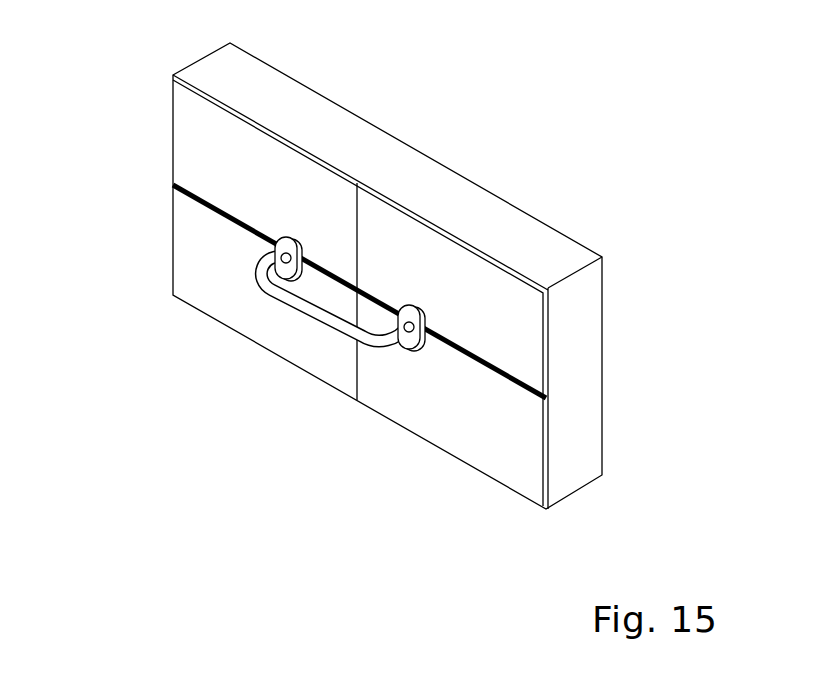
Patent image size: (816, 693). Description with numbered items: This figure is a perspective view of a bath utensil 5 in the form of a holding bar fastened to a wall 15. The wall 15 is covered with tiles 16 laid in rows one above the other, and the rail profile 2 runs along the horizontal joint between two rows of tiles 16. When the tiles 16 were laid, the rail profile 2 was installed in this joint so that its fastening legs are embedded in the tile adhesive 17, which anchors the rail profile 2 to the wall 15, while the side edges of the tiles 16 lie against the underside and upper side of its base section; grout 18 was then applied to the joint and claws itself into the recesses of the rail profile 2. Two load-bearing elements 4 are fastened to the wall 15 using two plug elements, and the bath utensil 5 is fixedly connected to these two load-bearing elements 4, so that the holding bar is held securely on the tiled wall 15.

The rail profile 2 is at (437, 333).
The load-bearing element 4 is at (286, 238).
The bath utensil 5 is at (330, 320).
The wall 15 is at (548, 252).
The tiles 16 is at (198, 145).
The tile adhesive 17 is at (547, 367).
The grout 18 is at (360, 268).